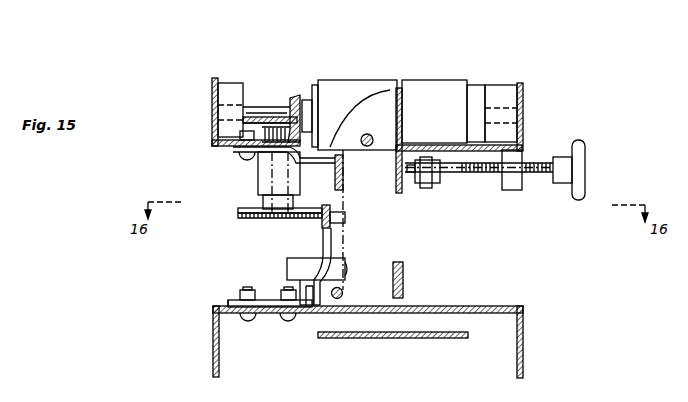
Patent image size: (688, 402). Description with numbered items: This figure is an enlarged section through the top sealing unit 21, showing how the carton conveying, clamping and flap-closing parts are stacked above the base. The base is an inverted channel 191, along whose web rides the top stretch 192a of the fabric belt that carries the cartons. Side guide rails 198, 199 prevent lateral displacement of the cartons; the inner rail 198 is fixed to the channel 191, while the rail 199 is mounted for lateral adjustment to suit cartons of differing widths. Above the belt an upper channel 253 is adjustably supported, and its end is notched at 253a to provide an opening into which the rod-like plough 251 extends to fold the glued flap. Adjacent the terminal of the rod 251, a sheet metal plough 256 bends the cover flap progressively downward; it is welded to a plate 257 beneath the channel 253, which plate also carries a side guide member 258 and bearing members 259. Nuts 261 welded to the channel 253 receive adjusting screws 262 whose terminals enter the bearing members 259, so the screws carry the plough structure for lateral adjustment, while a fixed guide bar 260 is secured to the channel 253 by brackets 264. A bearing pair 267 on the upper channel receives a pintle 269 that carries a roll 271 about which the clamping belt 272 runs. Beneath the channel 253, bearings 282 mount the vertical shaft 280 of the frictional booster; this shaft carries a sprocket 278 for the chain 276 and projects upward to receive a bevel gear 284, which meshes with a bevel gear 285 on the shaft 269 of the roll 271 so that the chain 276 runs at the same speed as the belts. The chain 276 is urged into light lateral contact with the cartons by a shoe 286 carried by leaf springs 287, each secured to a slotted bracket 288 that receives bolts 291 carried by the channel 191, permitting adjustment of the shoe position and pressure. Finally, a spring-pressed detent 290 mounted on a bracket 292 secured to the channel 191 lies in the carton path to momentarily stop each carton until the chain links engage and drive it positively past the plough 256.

The top sealing unit 21 is at (533, 343).
The inverted channel 191 is at (523, 376).
The top stretch of the belt 192a is at (465, 307).
The side guide rail 198 is at (337, 299).
The side guide rail 199 is at (403, 292).
The plough 251 is at (366, 134).
The upper channel 253 is at (523, 93).
The notch 253a is at (435, 143).
The plough 256 is at (390, 90).
The plate 257 is at (522, 157).
The side guide member 258 is at (400, 192).
The bearing members 259 is at (432, 188).
The fixed guide bar 260 is at (343, 183).
The nuts 261 is at (522, 190).
The adjusting screws 262 is at (545, 160).
The brackets 264 is at (233, 152).
The bearing pair 267 is at (230, 85).
The pintle 269 is at (212, 96).
The roll 271 is at (478, 85).
The clamping belt 272 is at (399, 88).
The chain 276 is at (238, 214).
The sprocket 278 is at (268, 219).
The vertical shaft 280 is at (240, 158).
The bearings 282 is at (258, 166).
The bevel gear 284 is at (265, 110).
The bevel gear 285 is at (298, 92).
The shoe 286 is at (322, 218).
The leaf springs 287 is at (292, 260).
The bracket 288 is at (230, 300).
The spring-pressed detent 290 is at (346, 258).
The bolts 291 is at (242, 319).
The bracket 292 is at (268, 300).